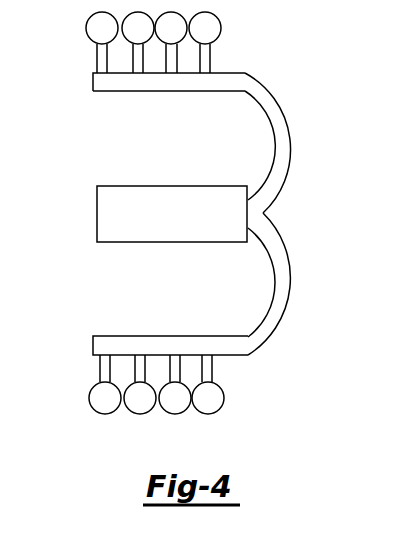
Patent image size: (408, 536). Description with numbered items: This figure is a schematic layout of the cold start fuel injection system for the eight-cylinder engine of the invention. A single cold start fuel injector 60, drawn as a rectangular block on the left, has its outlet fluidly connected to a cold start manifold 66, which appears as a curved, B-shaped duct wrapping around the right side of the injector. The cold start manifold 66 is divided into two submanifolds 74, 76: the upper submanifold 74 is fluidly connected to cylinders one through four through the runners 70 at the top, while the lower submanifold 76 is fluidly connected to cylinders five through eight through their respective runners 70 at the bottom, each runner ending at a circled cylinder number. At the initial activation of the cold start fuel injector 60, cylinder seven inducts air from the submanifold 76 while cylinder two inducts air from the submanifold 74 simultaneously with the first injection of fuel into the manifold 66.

The cold start fuel injector 60 is at (97, 202).
The cold start manifold 66 is at (308, 214).
The runners 70 is at (97, 60).
The submanifold 74 is at (280, 111).
The submanifold 76 is at (290, 270).